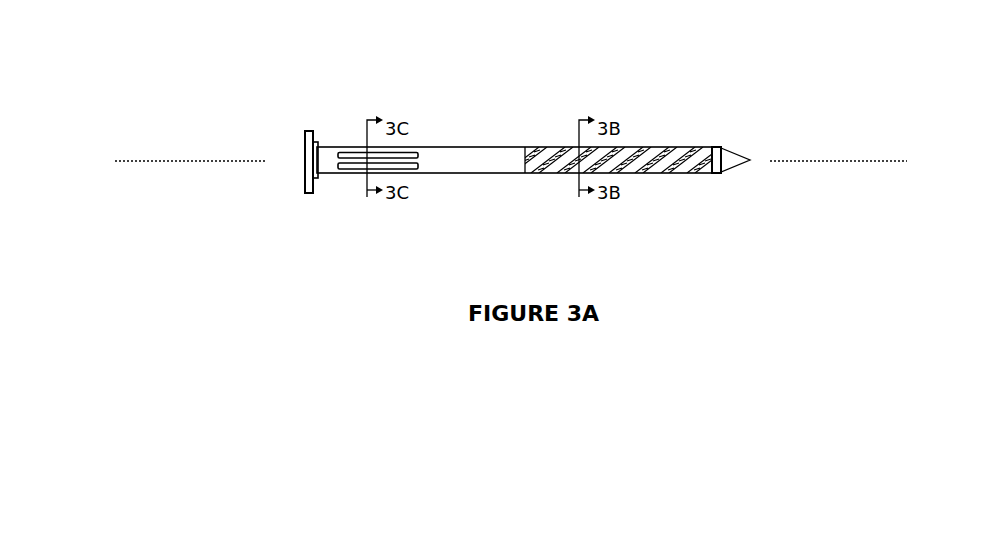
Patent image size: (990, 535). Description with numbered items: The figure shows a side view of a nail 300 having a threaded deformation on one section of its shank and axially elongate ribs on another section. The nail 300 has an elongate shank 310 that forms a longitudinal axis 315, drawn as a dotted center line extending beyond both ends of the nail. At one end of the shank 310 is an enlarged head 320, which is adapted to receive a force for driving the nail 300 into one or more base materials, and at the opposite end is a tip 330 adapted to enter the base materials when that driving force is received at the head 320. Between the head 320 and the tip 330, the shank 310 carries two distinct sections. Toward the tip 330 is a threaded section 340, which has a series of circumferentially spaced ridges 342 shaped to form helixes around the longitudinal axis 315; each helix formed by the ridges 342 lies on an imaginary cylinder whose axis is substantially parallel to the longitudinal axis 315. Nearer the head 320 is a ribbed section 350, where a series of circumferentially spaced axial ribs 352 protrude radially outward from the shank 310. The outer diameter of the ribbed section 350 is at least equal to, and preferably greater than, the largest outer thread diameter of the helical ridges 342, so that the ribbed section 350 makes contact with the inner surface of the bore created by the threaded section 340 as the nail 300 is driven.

The nail 300 is at (231, 52).
The elongate shank 310 is at (540, 82).
The longitudinal axis 315 is at (896, 153).
The enlarged head 320 is at (303, 182).
The tip 330 is at (735, 168).
The threaded section 340 is at (644, 165).
The ridges 342 is at (678, 139).
The ribbed section 350 is at (344, 155).
The axial ribs 352 is at (340, 136).